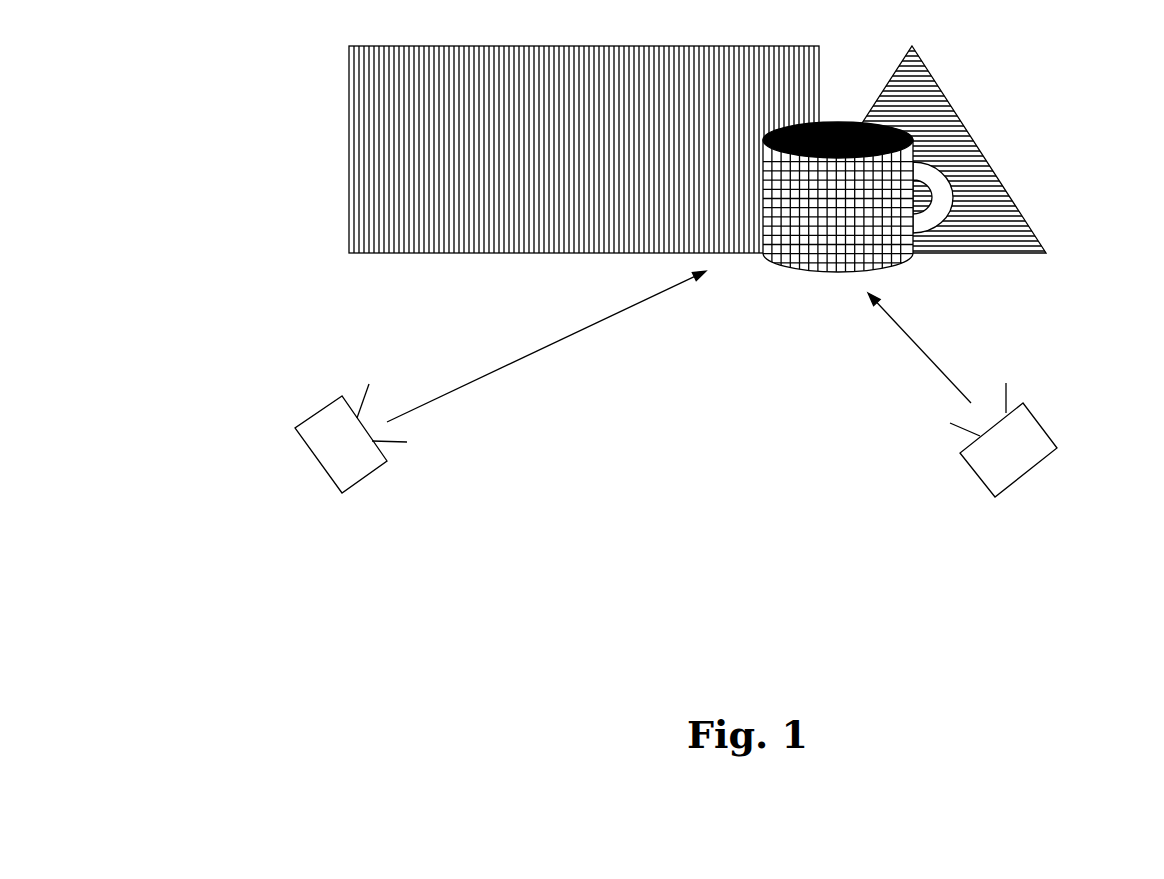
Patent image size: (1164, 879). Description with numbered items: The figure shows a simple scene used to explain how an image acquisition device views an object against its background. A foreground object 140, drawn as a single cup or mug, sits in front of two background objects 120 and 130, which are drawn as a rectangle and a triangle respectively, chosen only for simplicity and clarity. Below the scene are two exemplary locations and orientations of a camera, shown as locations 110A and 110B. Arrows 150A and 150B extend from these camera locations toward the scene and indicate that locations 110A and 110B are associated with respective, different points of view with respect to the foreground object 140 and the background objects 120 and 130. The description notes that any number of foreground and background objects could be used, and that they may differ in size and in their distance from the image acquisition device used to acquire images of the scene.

The image acquisition device location 110A is at (330, 479).
The image acquisition device location 110B is at (1047, 436).
The background object 120 is at (349, 140).
The background object 130 is at (948, 101).
The foreground object 140 is at (818, 272).
The arrow 150A is at (594, 327).
The arrow 150B is at (894, 328).